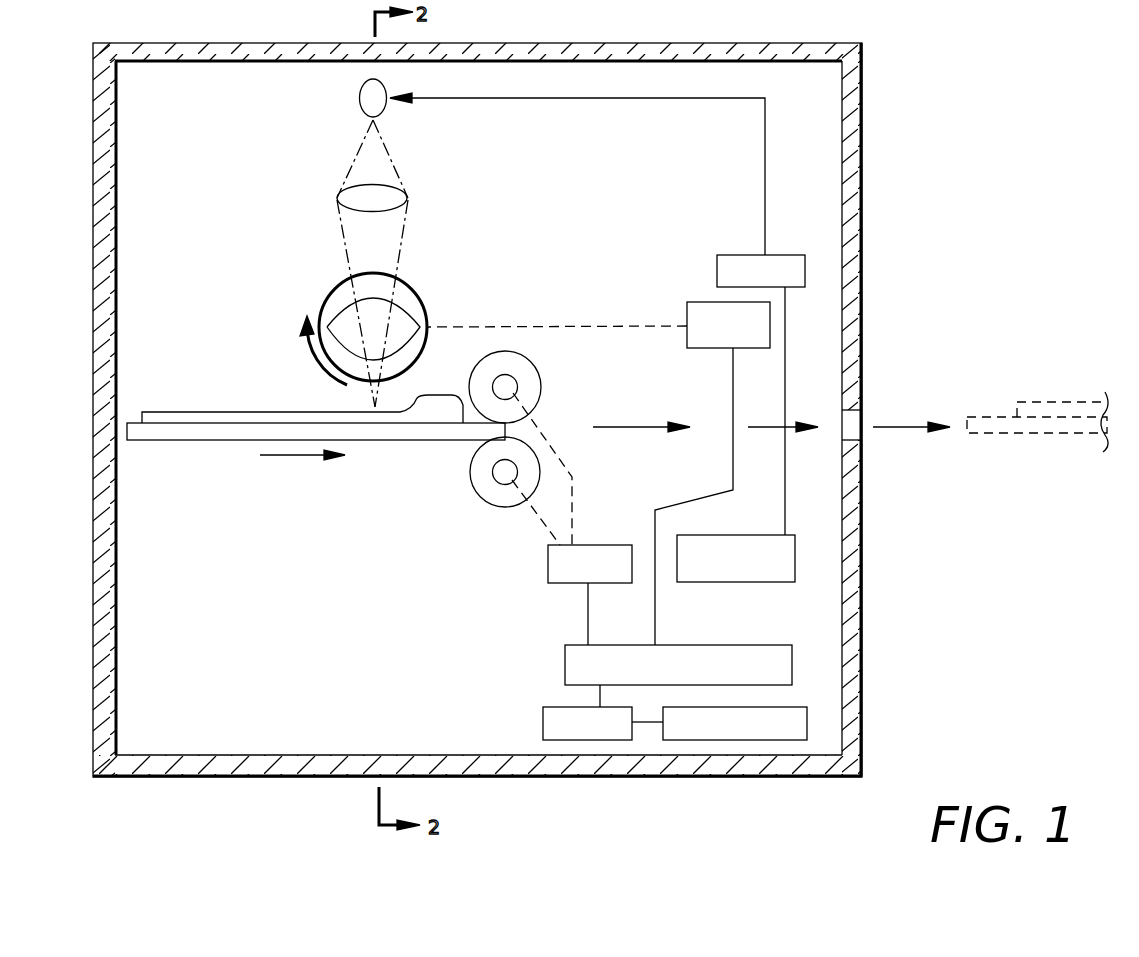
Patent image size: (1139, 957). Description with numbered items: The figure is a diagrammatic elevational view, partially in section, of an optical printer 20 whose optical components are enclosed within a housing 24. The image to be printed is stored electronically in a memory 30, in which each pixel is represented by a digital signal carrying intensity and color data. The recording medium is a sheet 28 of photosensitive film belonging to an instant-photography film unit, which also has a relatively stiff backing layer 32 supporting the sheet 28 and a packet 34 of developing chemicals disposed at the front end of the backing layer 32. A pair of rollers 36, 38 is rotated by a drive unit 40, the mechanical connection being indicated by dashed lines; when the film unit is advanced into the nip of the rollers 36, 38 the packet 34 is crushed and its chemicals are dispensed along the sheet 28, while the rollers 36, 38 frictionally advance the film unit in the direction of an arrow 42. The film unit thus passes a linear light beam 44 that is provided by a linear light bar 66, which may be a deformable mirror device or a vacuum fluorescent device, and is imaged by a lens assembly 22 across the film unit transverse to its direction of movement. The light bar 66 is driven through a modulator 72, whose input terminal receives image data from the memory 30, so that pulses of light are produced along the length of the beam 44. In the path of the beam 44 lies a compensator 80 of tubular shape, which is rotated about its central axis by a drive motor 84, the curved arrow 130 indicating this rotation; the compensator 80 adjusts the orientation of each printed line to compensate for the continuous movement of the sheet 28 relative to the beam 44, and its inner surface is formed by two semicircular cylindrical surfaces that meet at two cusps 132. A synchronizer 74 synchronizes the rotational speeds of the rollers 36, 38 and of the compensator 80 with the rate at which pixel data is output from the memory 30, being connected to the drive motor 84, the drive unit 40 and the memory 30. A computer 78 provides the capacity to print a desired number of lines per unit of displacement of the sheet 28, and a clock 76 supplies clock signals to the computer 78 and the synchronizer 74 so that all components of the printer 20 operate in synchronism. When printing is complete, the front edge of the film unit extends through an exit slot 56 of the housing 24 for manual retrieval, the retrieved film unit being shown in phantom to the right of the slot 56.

The optical printer 20 is at (888, 200).
The lens assembly 22 is at (385, 212).
The housing 24 is at (863, 232).
The sheet of photosensitive film 28 is at (252, 412).
The memory 30 is at (722, 535).
The backing layer 32 is at (176, 440).
The packet of chemicals 34 is at (438, 395).
The roller 36 is at (541, 375).
The roller 38 is at (470, 485).
The drive unit 40 is at (618, 543).
The arrow 42 is at (282, 456).
The linear light beam 44 is at (397, 262).
The exit slot 56 is at (863, 420).
The linear light bar 66 is at (360, 98).
The modulator 72 is at (717, 272).
The synchronizer 74 is at (705, 645).
The clock 76 is at (543, 725).
The computer 78 is at (807, 725).
The compensator 80 is at (425, 295).
The drive motor 84 is at (745, 348).
The direction of disc rotation 130 is at (320, 367).
The cusps 132 is at (331, 327).